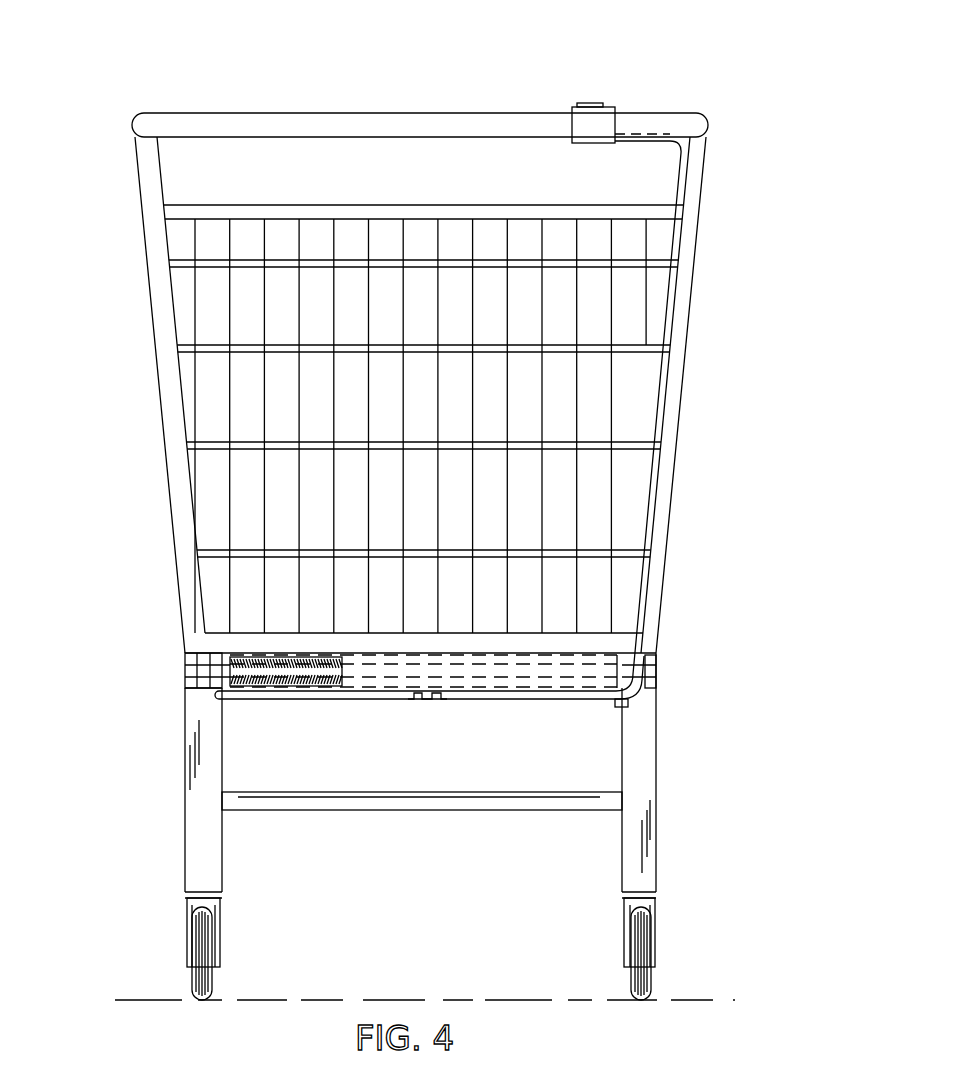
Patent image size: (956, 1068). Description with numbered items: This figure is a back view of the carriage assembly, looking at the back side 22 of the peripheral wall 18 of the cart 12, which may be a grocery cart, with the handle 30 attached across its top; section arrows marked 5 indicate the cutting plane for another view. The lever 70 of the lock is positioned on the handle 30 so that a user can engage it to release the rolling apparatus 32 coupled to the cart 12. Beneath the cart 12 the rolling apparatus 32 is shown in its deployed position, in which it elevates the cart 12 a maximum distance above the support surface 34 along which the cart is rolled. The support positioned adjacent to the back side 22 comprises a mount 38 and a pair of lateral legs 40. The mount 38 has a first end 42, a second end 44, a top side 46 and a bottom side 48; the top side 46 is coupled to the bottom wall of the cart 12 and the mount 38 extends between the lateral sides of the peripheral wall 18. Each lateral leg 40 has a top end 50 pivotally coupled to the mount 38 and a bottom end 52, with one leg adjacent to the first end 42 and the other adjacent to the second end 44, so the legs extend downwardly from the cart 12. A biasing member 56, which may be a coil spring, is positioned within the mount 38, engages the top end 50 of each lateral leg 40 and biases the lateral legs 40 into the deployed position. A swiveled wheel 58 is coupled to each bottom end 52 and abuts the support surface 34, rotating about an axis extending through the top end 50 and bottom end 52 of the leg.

The cart 12 is at (418, 170).
The peripheral wall 18 is at (210, 405).
The back side 22 is at (245, 490).
The handle 30 is at (490, 117).
The rolling apparatus 32 is at (672, 838).
The support surface 34 is at (150, 1000).
The mount 38 is at (472, 699).
The lateral legs 40 is at (185, 809).
The first end 42 is at (185, 673).
The second end 44 is at (655, 670).
The top side 46 is at (578, 652).
The bottom side 48 is at (546, 699).
The top end 50 is at (200, 652).
The bottom end 52 is at (188, 904).
The biasing member 56 is at (300, 688).
The swiveled wheels 58 is at (203, 940).
The lever 70 is at (578, 100).
The section line 5- 5 is at (421, 682).